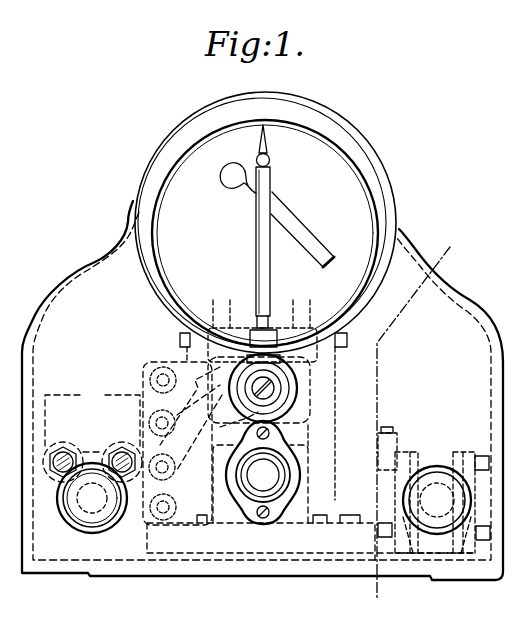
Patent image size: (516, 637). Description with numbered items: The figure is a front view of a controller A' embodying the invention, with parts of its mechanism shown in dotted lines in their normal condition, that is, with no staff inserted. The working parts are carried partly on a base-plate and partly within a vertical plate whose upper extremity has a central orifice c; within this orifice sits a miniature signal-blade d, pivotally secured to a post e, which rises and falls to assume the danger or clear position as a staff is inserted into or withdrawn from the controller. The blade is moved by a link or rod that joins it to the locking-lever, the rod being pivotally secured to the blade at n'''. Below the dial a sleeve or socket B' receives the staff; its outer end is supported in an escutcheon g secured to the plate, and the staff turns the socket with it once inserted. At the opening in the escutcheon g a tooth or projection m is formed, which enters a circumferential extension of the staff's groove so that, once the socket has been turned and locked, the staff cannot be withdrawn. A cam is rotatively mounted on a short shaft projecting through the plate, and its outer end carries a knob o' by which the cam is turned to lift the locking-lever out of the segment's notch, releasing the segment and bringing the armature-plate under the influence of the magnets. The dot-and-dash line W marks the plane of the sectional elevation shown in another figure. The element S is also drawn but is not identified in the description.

The controller A' is at (262, 390).
The central orifice c is at (350, 177).
The miniature signal-blade d is at (308, 237).
The post e is at (257, 232).
The pivotal connection n''' is at (236, 187).
The section line W W is at (420, 430).
The knob o' is at (285, 388).
The tooth or projection m is at (258, 467).
The sleeve or socket B' is at (260, 472).
The escutcheon g is at (252, 500).
The shaft cap S is at (434, 490).